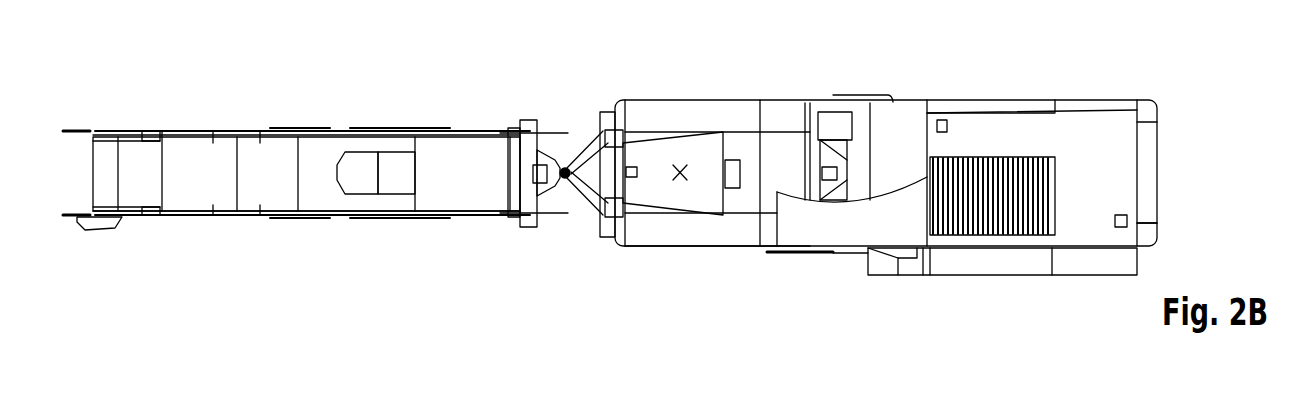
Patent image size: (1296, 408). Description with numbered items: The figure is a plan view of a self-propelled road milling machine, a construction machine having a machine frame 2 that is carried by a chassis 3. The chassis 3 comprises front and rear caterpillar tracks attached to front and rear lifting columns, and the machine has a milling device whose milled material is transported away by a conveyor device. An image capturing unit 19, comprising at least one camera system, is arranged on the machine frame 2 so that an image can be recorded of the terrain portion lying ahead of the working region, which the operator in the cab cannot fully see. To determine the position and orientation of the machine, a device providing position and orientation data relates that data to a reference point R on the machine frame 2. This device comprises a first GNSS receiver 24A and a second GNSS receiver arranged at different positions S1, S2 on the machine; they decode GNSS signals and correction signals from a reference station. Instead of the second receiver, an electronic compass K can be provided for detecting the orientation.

The machine frame 2 is at (714, 86).
The chassis 3 is at (742, 254).
The reference point R is at (679, 165).
The image capturing unit 19 is at (634, 179).
The first position S1 is at (942, 119).
The second position S2 is at (1121, 228).
The electronic compass K is at (1128, 221).
The first GNSS receiver 24A is at (950, 127).